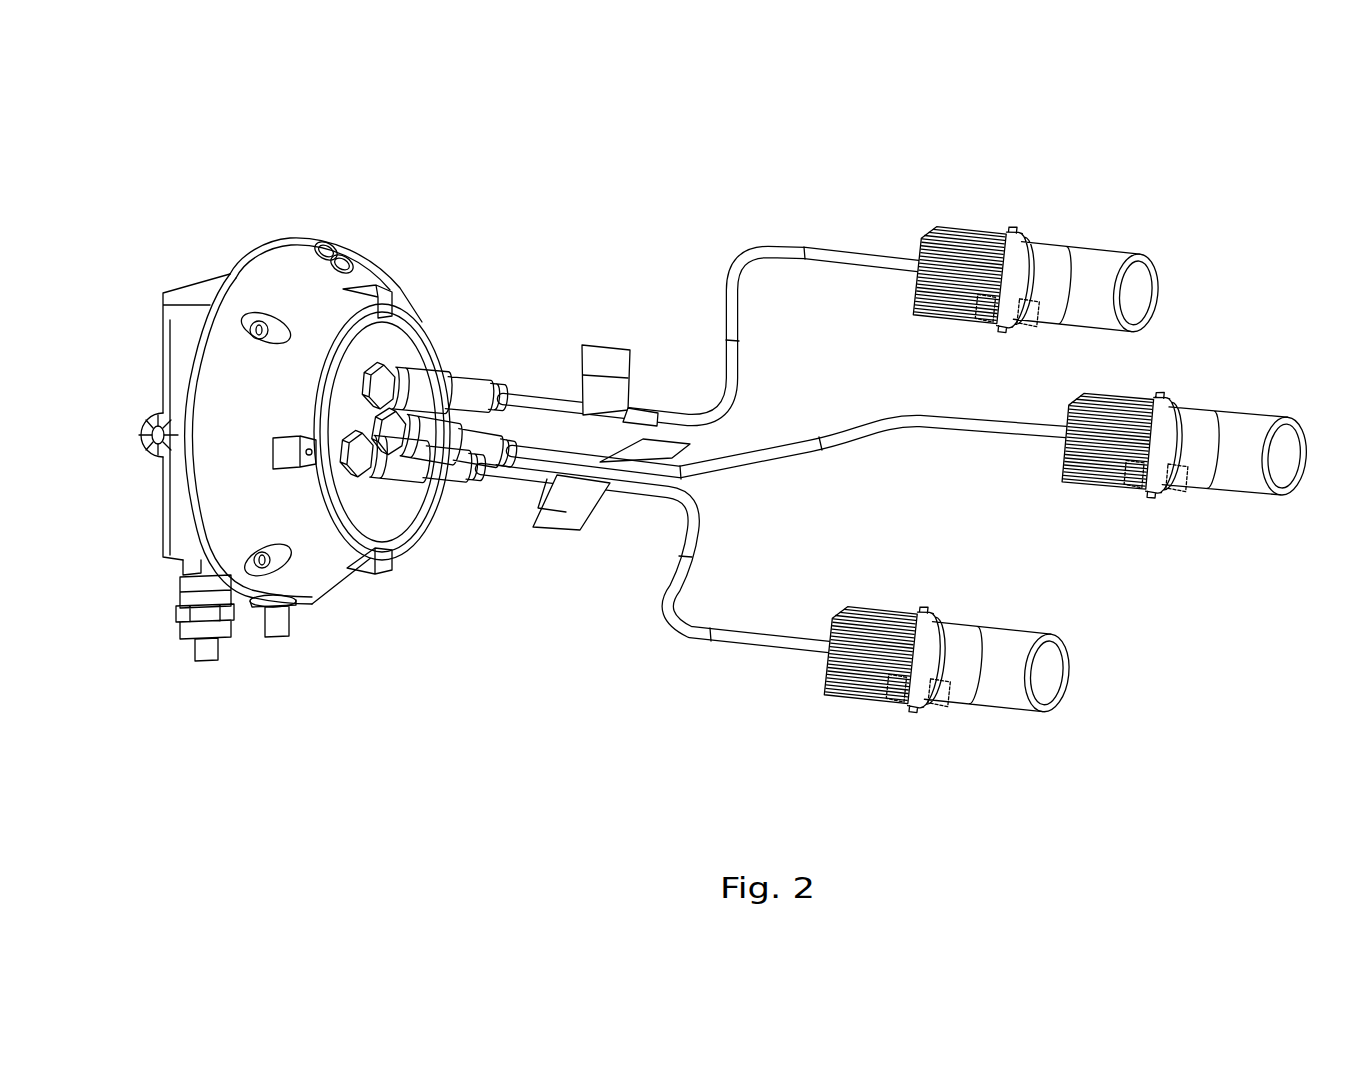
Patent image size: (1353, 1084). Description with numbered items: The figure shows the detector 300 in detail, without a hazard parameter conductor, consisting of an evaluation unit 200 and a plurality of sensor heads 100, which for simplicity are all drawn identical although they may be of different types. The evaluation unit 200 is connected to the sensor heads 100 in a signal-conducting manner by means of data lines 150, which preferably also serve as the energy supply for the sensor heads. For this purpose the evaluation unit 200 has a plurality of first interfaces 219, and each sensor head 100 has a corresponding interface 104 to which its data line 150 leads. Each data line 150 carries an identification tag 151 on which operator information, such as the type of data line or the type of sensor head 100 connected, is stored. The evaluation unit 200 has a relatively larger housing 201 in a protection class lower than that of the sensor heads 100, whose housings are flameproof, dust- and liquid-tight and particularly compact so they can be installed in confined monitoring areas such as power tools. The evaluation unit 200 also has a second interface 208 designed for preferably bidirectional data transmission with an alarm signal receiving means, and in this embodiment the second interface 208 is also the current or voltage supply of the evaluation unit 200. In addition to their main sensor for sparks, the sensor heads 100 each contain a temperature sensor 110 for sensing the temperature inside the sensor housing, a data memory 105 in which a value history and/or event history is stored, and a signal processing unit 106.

The sensor head 100 is at (1047, 224).
The interface 104 is at (895, 232).
The data memory 105 is at (952, 527).
The signal processing unit 106 is at (984, 312).
The temperature sensor 110 is at (1027, 316).
The data line 150 is at (745, 247).
The identification tag 151 is at (592, 343).
The evaluation unit 200 is at (258, 208).
The housing 201 is at (355, 250).
The second interface 208 is at (158, 585).
The first interface 219 is at (390, 360).
The detector 300 is at (490, 198).